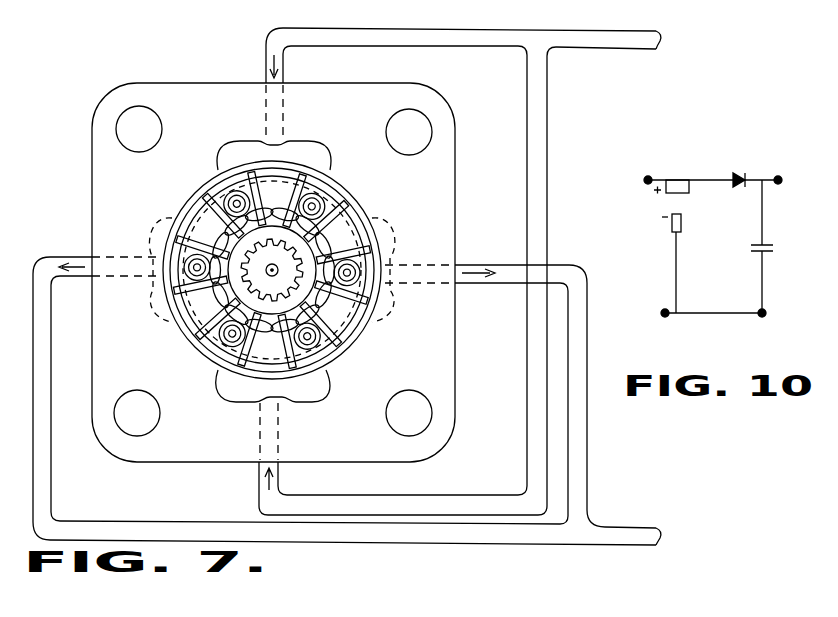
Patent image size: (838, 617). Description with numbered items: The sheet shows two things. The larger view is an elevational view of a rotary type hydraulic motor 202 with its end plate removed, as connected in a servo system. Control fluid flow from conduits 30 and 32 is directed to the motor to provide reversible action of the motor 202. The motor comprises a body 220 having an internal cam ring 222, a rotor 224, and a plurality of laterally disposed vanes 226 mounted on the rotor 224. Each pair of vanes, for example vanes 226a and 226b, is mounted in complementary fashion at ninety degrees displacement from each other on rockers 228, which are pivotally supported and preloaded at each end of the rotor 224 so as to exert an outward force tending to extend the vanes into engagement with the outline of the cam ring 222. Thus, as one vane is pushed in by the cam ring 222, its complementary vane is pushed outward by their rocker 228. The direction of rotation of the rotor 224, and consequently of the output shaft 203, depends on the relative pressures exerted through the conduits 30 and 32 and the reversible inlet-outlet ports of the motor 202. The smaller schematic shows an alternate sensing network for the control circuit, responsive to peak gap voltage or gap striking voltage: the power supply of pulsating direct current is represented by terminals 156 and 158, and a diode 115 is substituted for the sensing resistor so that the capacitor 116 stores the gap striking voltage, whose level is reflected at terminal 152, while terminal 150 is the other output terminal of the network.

In FIG. 7, the conduit 30 is at (588, 33).
In FIG. 7, the conduit 32 is at (593, 527).
In FIG. 7, the hydraulic motor 202 is at (303, 272).
In FIG. 7, the body 220 is at (453, 168).
In FIG. 7, the cam ring 222 is at (178, 218).
In FIG. 7, the rotor 224 is at (330, 322).
In FIG. 7, the vanes 226 is at (348, 207).
In FIG. 7, the vane 226a is at (244, 178).
In FIG. 7, the vane 226b is at (366, 219).
In FIG. 7, the rockers 228 is at (340, 240).
In FIG. 7, the output shaft 203 is at (272, 270).
In FIG. 10, the diode 115 is at (734, 176).
In FIG. 10, the capacitor 116 is at (760, 253).
In FIG. 10, the terminal 150 is at (764, 316).
In FIG. 10, the terminal 152 is at (779, 184).
In FIG. 10, the terminal 156 is at (663, 316).
In FIG. 10, the terminal 158 is at (644, 181).